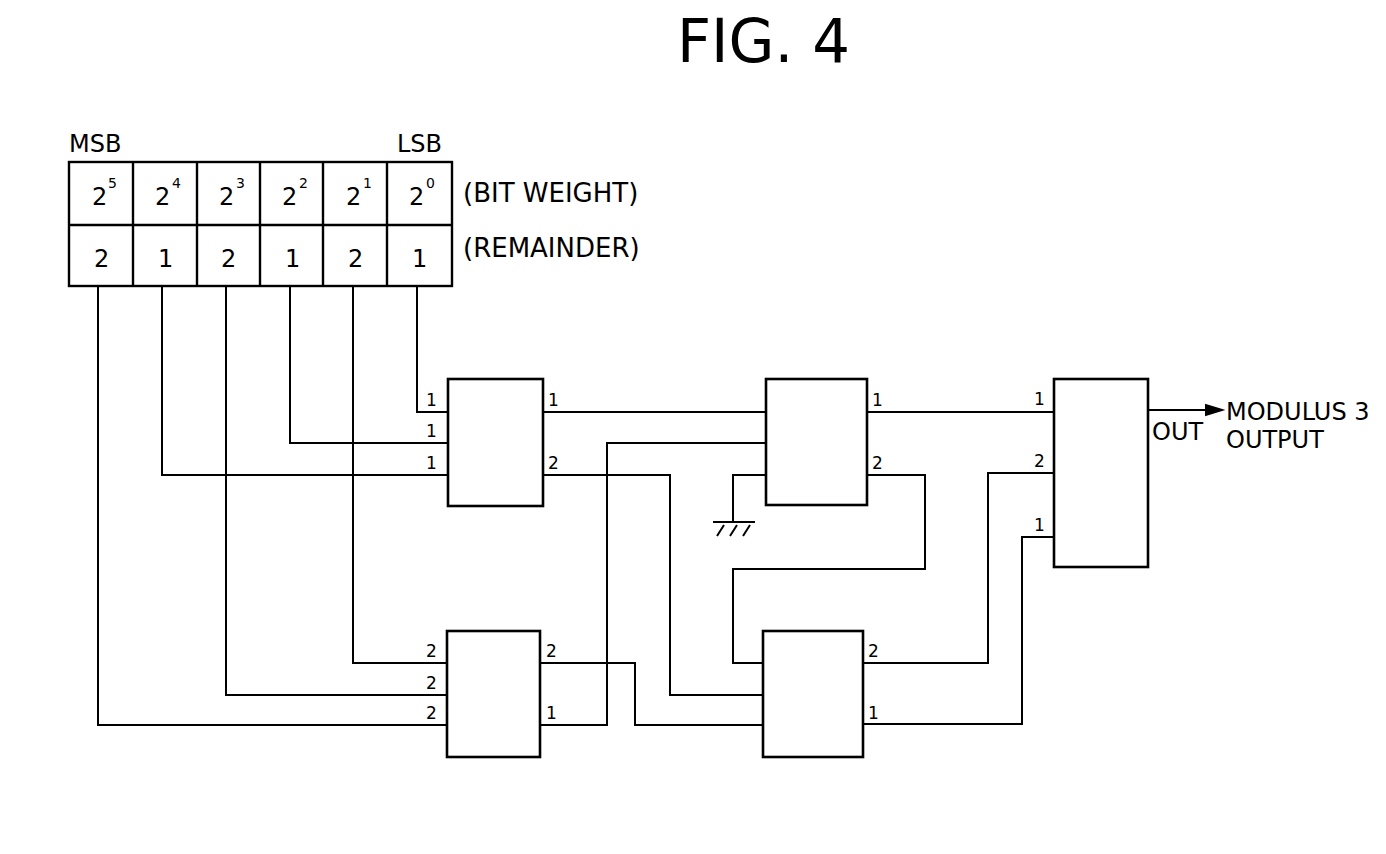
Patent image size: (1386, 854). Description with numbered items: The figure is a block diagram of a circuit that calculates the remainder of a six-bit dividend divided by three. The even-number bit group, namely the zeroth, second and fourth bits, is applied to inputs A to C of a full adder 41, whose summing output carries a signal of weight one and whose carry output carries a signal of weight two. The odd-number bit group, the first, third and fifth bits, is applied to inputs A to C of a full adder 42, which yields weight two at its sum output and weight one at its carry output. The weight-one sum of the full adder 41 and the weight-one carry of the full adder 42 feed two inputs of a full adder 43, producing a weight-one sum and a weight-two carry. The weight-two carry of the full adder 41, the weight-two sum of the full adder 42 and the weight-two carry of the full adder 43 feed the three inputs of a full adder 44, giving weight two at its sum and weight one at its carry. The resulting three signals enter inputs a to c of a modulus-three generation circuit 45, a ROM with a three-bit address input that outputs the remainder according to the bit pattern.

The full adder 41 is at (505, 379).
The full adder 42 is at (505, 622).
The full adder 43 is at (830, 379).
The full adder 44 is at (823, 622).
The modulus 3 generation circuit 45 is at (1108, 379).